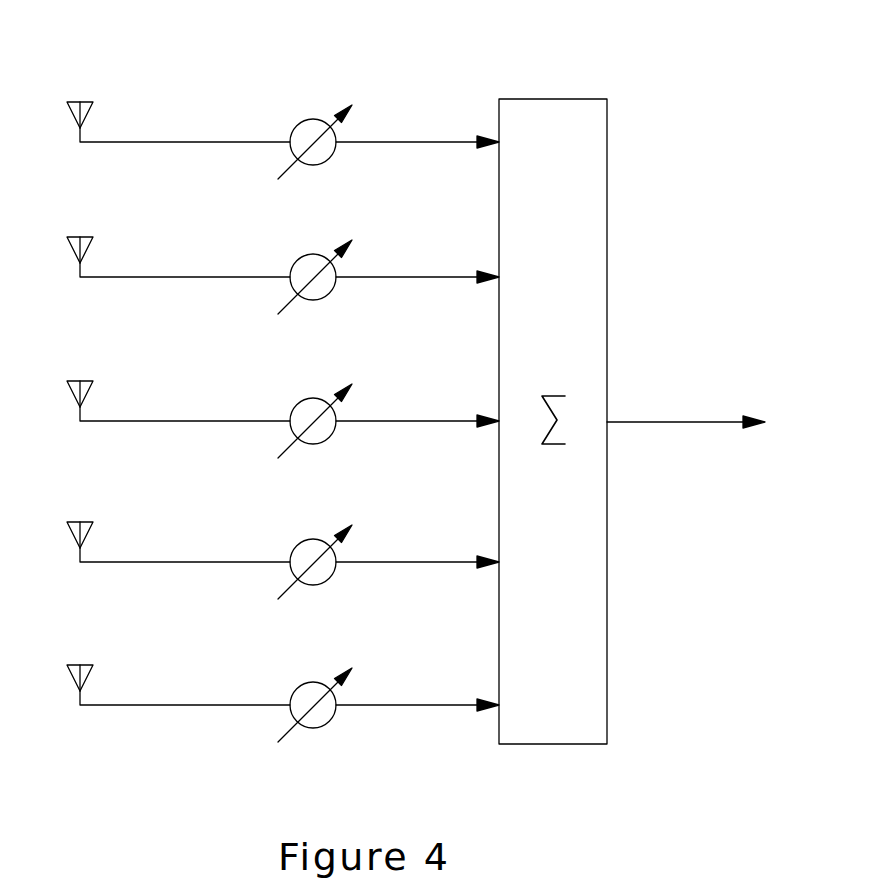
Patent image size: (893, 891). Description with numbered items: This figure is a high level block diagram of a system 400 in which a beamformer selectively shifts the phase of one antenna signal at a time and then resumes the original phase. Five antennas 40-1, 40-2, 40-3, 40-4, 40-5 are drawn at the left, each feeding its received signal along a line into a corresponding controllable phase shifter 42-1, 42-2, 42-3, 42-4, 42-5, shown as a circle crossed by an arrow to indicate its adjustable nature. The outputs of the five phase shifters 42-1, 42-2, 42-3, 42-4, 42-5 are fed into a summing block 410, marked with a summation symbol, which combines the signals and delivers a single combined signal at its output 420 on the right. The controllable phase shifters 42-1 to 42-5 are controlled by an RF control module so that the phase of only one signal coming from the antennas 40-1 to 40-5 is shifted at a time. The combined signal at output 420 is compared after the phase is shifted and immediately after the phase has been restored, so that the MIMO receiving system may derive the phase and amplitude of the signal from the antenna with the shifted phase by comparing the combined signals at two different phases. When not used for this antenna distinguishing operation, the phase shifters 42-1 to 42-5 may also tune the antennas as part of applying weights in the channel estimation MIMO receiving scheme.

The system 400 is at (707, 657).
The antenna 40-1 is at (78, 127).
The antenna 40-2 is at (78, 262).
The antenna 40-3 is at (78, 406).
The antenna 40-4 is at (78, 547).
The antenna 40-5 is at (78, 690).
The controllable phase shifter 42-1 is at (296, 124).
The controllable phase shifter 42-2 is at (296, 259).
The controllable phase shifter 42-3 is at (296, 403).
The controllable phase shifter 42-4 is at (296, 544).
The controllable phase shifter 42-5 is at (296, 687).
The summer 410 is at (585, 99).
The output 420 is at (766, 422).